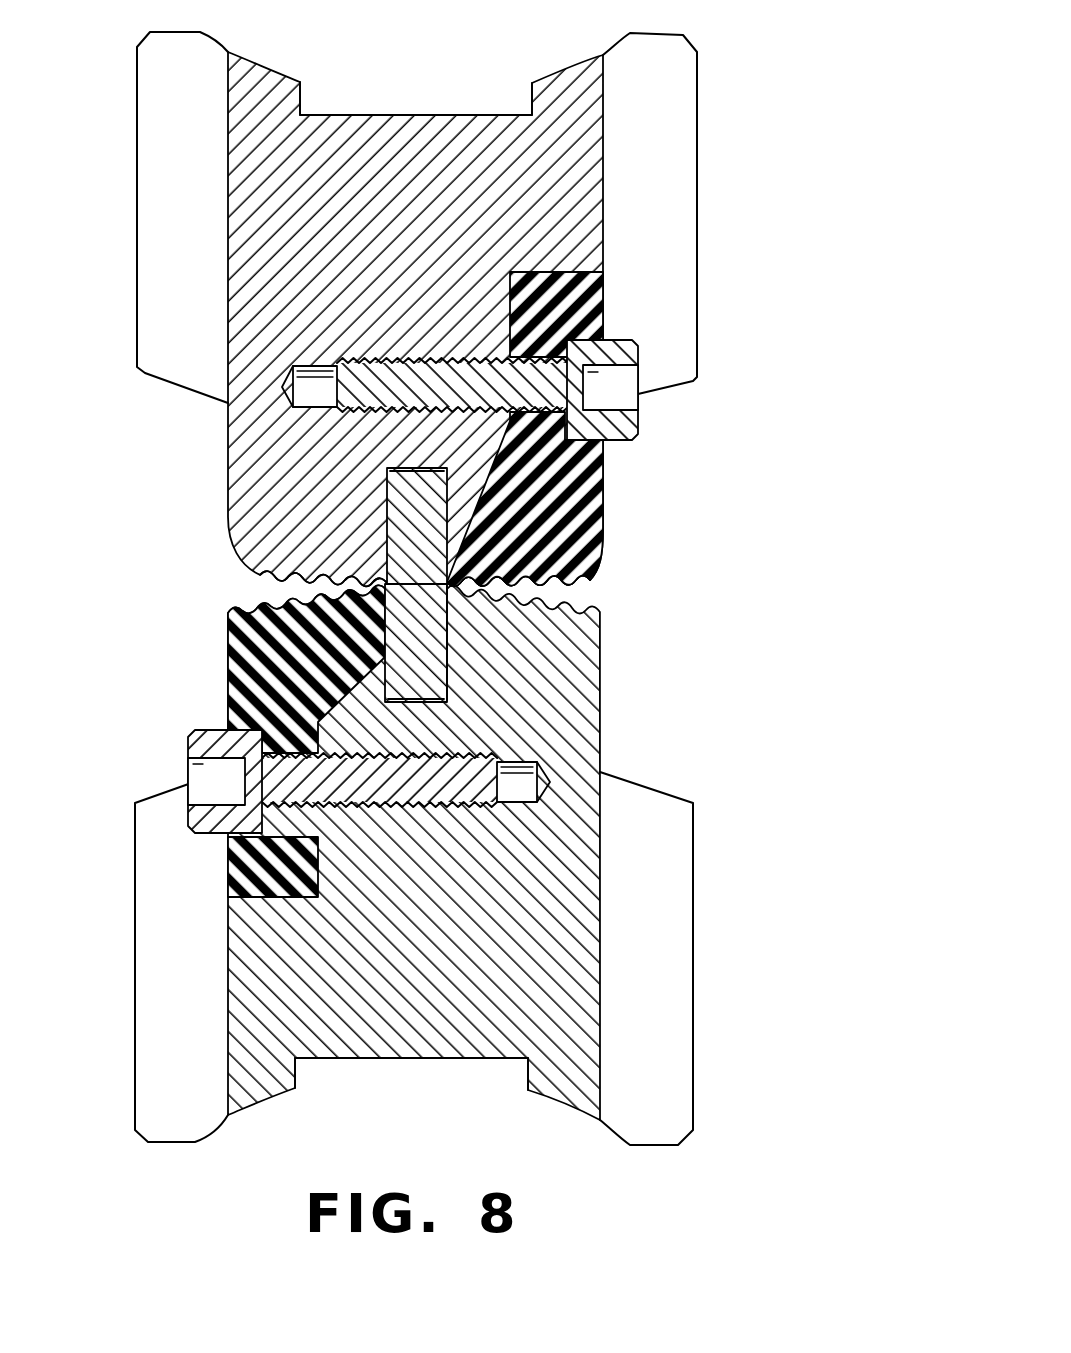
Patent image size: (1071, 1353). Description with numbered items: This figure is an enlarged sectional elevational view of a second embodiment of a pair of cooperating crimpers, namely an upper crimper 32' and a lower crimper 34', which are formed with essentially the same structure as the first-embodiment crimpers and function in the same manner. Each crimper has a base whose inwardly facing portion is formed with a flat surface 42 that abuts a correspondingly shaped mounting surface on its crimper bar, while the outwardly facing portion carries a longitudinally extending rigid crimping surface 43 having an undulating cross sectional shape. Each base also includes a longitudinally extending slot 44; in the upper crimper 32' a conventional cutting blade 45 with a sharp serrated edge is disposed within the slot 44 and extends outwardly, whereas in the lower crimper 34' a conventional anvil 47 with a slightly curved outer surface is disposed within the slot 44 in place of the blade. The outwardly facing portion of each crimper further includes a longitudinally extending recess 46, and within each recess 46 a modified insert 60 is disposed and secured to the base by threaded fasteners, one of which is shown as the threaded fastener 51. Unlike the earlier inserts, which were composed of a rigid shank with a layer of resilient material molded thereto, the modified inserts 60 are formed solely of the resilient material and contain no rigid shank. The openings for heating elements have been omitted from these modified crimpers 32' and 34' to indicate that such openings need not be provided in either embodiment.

The upper crimper 32' is at (491, 294).
The lower crimper 34' is at (482, 876).
The flat surface 42 is at (355, 115).
The rigid crimping surface 43 is at (253, 588).
The slot 44 is at (397, 509).
The cutting blade 45 is at (402, 538).
The recess 46 is at (597, 293).
The anvil 47 is at (442, 623).
The threaded fastener 51 is at (628, 350).
The modified insert 60 is at (632, 470).